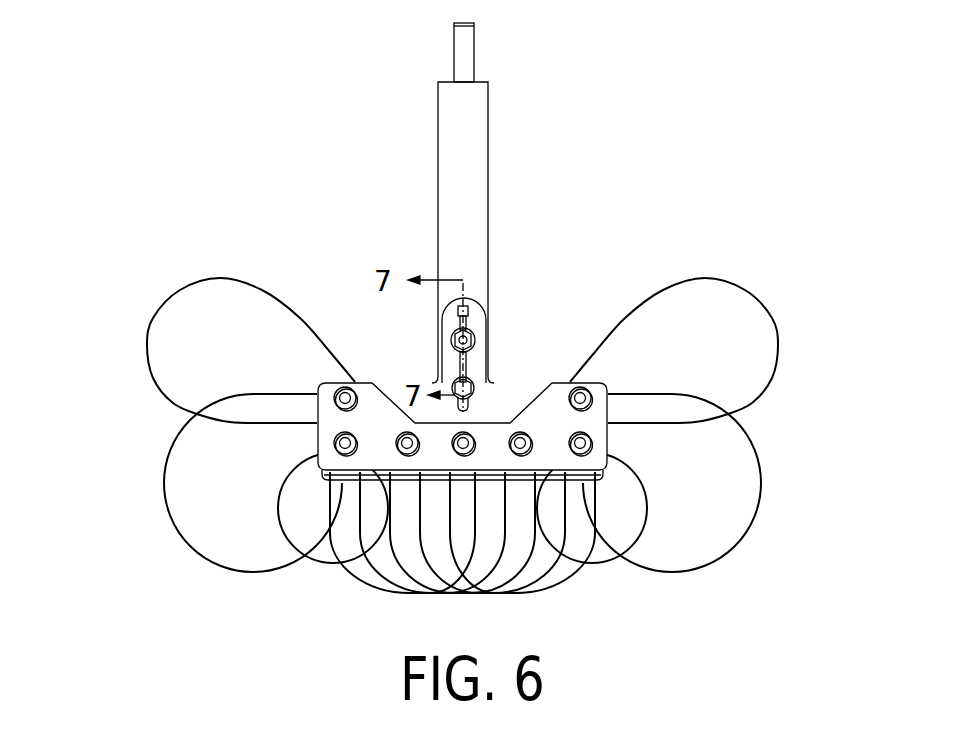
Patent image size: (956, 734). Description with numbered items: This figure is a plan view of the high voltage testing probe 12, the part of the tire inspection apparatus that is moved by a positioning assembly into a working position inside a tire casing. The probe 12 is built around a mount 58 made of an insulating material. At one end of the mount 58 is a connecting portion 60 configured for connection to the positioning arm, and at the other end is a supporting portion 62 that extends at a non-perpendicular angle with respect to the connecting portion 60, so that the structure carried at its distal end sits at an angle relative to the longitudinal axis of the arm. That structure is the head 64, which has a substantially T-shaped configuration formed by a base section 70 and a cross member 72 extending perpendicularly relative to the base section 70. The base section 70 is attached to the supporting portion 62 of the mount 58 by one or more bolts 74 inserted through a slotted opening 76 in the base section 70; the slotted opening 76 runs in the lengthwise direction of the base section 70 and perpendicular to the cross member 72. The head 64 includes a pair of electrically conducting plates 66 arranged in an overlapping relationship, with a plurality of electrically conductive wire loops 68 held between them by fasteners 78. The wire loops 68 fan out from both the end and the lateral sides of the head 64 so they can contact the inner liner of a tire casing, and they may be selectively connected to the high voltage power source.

The testing probe 12 is at (483, 201).
The mount 58 is at (493, 192).
The connecting portion 60 is at (447, 147).
The supporting portion 62 is at (483, 368).
The head 64 is at (312, 487).
The plates 66 is at (327, 427).
The wire loops 68 is at (612, 562).
The base section 70 is at (421, 322).
The cross member 72 is at (590, 418).
The bolts 74 is at (455, 336).
The slotted opening 76 is at (457, 367).
The fasteners 78 is at (460, 452).